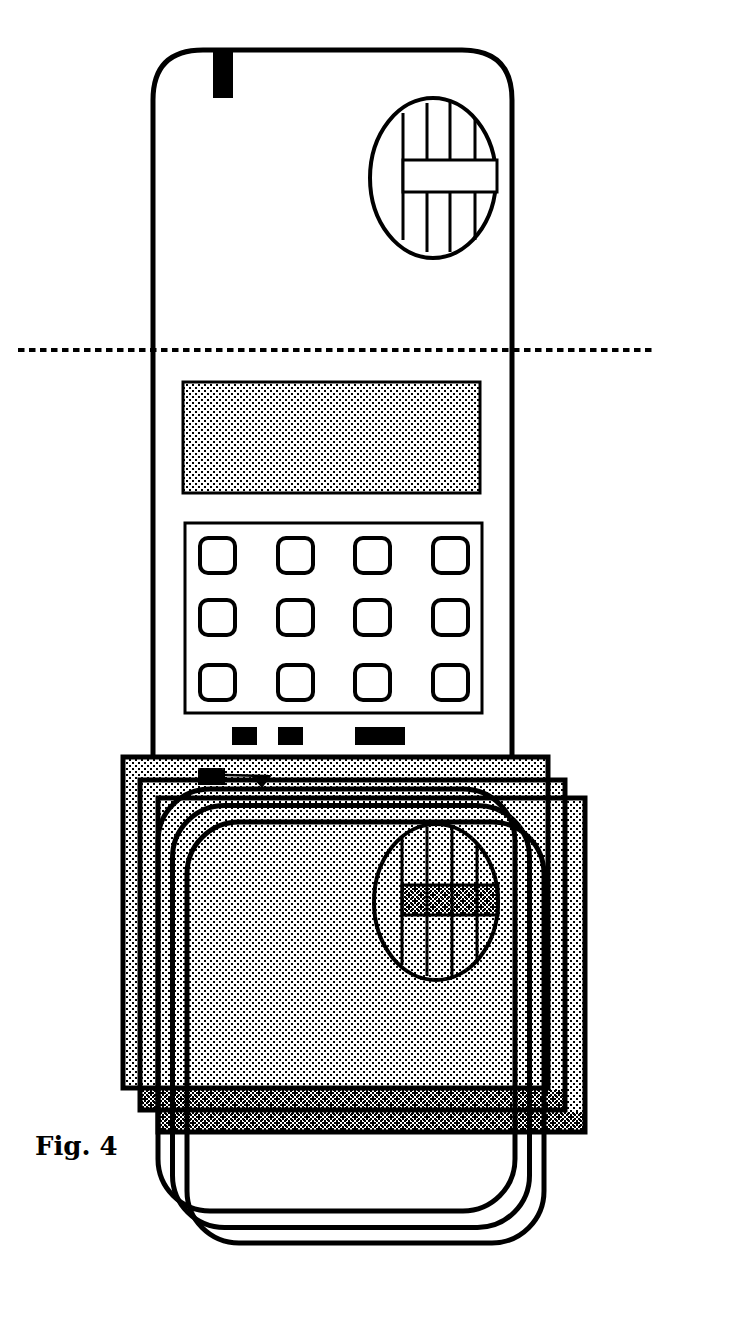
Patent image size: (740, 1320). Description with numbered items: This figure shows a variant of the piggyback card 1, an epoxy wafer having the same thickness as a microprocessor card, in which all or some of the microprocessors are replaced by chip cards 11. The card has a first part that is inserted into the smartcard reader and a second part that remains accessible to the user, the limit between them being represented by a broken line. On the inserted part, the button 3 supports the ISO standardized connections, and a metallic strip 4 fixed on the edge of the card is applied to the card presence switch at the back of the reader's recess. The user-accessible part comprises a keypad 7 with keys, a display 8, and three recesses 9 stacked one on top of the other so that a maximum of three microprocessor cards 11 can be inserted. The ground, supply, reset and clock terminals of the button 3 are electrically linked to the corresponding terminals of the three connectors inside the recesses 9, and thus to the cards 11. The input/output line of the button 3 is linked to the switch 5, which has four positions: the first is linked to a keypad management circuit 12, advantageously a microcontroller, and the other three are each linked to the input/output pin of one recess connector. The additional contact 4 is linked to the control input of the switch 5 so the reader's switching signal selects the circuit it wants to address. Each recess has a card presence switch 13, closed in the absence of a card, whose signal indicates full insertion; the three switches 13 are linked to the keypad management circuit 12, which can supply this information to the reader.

The piggyback card 1 is at (513, 332).
The button 3 is at (490, 137).
The metallic strip 4 is at (213, 82).
The switch 5 is at (408, 728).
The keypad 7 is at (482, 680).
The display 8 is at (480, 460).
The recesses 9 is at (585, 818).
The chip cards 11 is at (545, 1213).
The keypad management circuit 12 is at (228, 728).
The card presence switch 13 is at (198, 768).